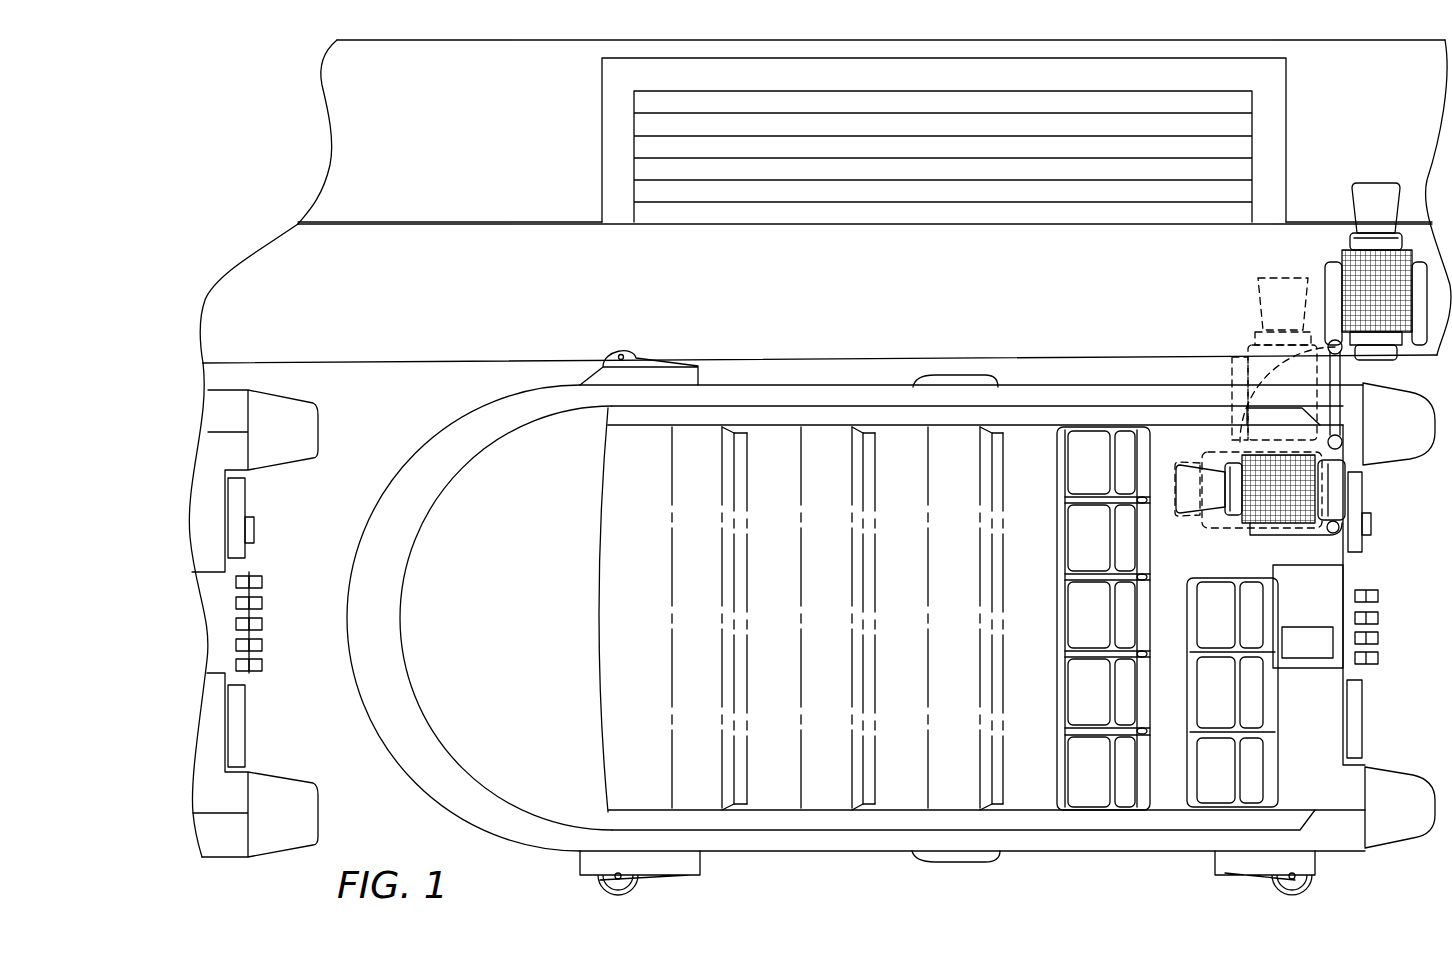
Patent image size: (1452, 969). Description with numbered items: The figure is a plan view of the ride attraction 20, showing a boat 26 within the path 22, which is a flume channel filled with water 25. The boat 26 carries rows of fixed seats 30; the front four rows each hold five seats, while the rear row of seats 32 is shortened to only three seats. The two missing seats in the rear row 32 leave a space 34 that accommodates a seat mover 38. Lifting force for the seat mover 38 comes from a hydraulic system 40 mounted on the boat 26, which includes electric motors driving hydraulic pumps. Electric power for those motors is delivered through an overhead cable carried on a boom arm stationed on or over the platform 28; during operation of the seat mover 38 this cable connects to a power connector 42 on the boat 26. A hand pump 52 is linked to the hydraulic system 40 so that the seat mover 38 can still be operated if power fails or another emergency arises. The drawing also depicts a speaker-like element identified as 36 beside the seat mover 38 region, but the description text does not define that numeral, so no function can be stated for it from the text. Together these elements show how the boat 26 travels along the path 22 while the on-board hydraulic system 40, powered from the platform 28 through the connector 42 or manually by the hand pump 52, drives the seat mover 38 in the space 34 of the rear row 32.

The ride attraction 20 is at (209, 219).
The path 22 is at (254, 297).
The water 25 is at (438, 248).
The boat 26 is at (415, 452).
The platform 28 is at (712, 227).
The fixed seats 30 is at (820, 777).
The rear row of seats 32 is at (1230, 706).
The space 34 is at (1229, 556).
The speaker in upright position 36 is at (1374, 479).
The seat mover 38 is at (1346, 441).
The hydraulic system 40 is at (1340, 606).
The power connector 42 is at (1372, 527).
The hand pump 52 is at (1312, 650).